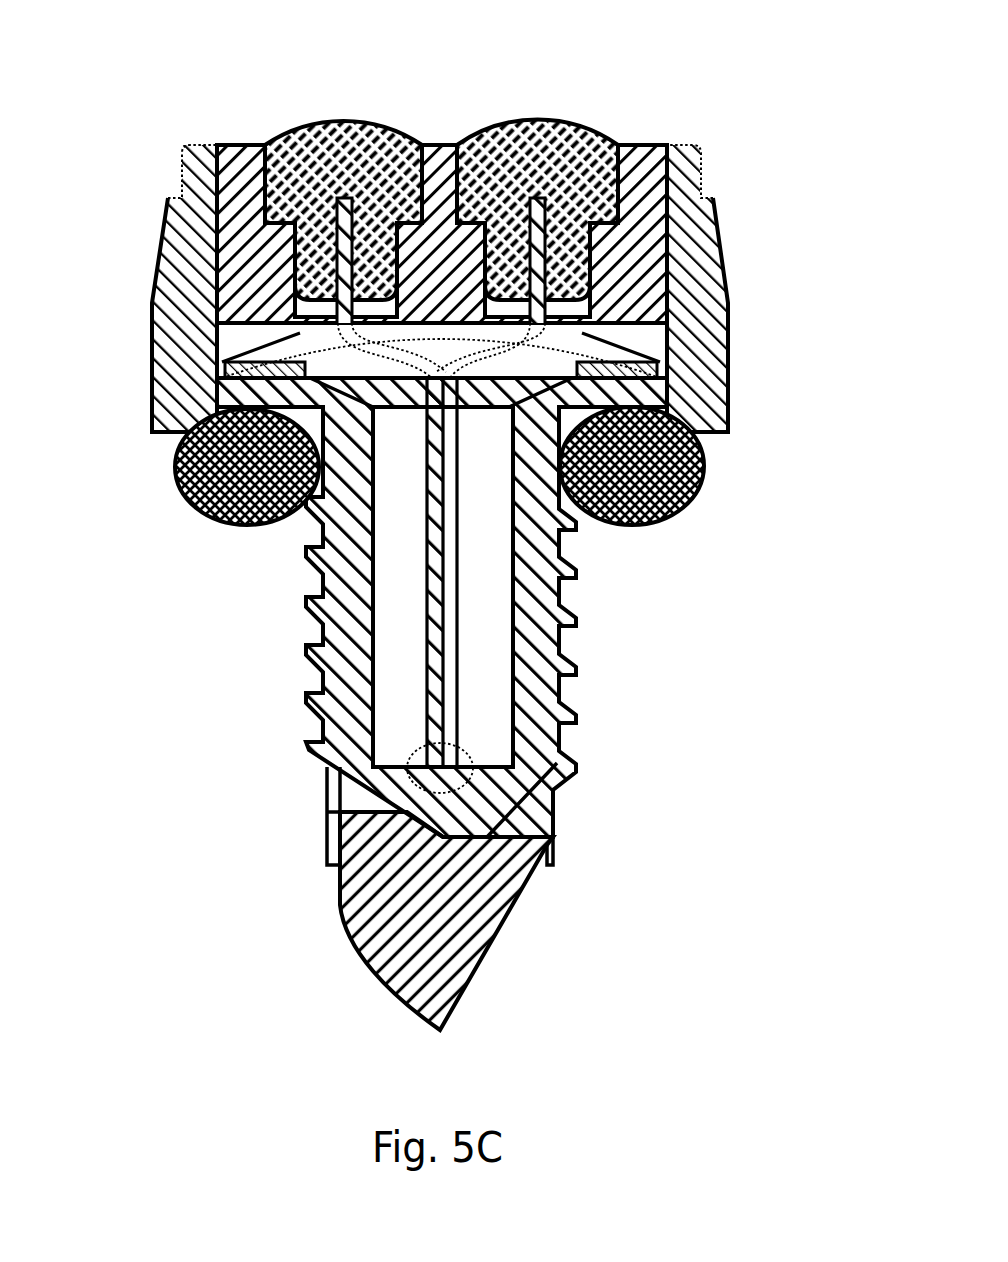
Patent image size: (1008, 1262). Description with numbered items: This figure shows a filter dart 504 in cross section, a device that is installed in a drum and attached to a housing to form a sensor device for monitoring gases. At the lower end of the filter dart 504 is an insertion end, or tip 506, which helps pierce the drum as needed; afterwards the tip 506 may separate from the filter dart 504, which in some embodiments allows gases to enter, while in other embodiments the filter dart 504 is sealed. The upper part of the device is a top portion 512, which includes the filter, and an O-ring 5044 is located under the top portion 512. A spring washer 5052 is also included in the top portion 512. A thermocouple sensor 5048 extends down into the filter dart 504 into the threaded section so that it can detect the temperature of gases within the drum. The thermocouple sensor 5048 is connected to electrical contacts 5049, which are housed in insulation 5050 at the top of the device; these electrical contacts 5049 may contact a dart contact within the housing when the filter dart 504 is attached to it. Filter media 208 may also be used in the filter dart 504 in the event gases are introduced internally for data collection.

The filter dart 504 is at (511, 288).
The top portion 512 is at (730, 387).
The insulation 5050 is at (653, 145).
The electrical contacts 5049 is at (346, 121).
The spring washer 5052 is at (250, 340).
The O-ring 5044 is at (190, 492).
The filter media 208 is at (355, 550).
The thermocouple sensor 5048 is at (460, 652).
The tip 506 is at (500, 933).